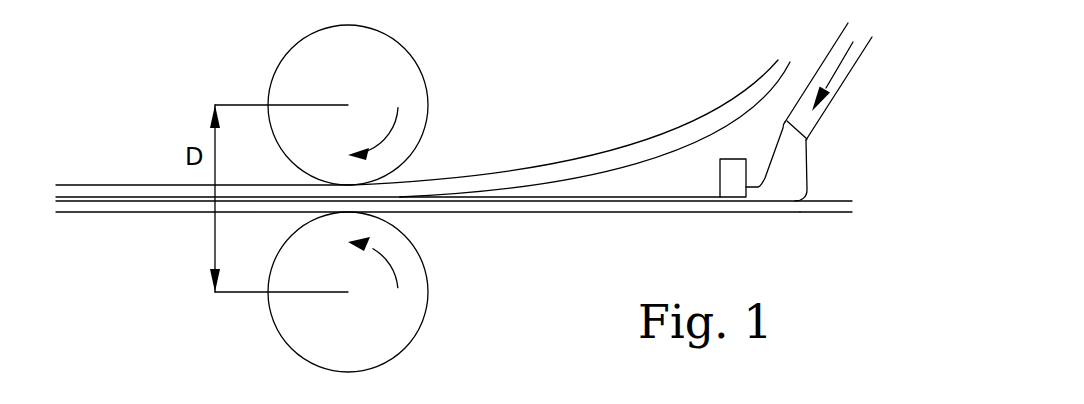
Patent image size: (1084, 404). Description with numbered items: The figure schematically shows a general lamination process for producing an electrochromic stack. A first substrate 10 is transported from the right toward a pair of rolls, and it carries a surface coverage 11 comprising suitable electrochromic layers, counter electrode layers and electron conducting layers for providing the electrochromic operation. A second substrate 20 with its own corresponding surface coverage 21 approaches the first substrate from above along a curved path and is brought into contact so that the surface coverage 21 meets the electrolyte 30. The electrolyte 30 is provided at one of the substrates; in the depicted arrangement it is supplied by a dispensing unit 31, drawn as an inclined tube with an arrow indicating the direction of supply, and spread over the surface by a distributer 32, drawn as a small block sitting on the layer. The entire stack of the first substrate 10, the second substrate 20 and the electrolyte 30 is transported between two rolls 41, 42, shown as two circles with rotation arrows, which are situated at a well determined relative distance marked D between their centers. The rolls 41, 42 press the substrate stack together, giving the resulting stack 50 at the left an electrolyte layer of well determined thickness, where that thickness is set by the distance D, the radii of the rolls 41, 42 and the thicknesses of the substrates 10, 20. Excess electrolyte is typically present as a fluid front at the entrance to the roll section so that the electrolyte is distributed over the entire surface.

The first substrate 10 is at (562, 207).
The surface coverage 11 is at (847, 202).
The second substrate 20 is at (593, 173).
The surface coverage 21 is at (668, 159).
The electrolyte 30 is at (653, 202).
The dispensing unit 31 is at (815, 121).
The distributer 32 is at (735, 182).
The roll 41 is at (404, 59).
The roll 42 is at (418, 293).
The resulting stack 50 is at (107, 210).